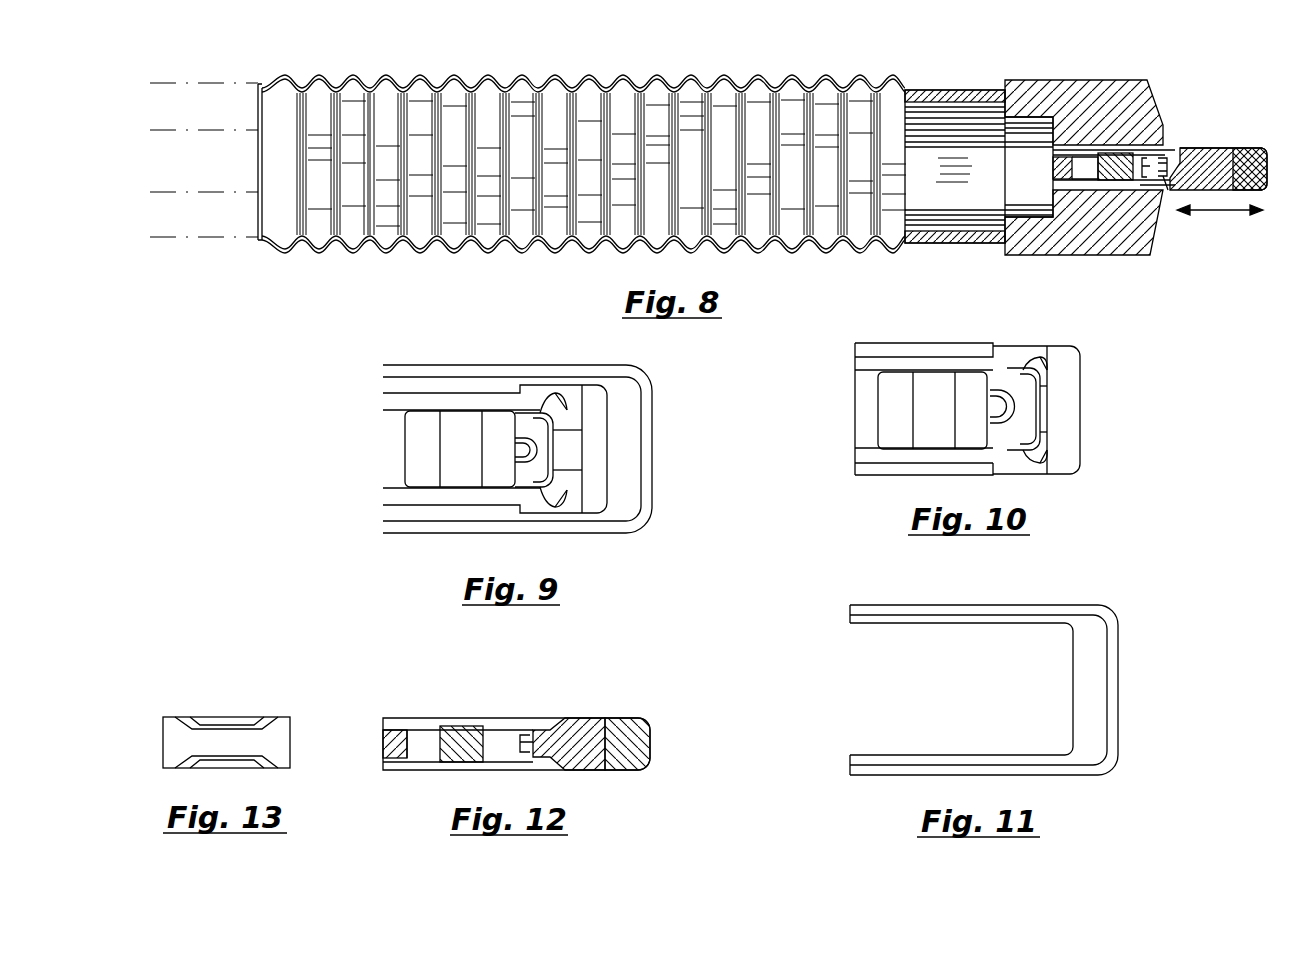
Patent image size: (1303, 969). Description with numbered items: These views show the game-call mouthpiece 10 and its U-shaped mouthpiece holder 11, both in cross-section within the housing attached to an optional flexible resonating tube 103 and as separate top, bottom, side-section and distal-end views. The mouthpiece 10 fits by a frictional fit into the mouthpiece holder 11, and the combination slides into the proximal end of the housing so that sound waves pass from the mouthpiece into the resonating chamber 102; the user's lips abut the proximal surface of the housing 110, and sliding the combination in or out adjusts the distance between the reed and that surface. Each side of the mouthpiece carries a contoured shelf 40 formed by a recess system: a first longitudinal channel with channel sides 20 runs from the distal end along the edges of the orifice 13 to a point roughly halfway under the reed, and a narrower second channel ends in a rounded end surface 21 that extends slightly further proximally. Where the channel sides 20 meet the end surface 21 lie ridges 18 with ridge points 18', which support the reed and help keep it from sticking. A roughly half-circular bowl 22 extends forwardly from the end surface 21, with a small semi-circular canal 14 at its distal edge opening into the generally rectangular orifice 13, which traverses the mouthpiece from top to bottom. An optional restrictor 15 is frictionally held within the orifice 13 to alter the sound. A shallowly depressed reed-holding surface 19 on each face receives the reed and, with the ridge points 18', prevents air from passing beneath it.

In FIG. 8, the mouthpiece 10 is at (1216, 146).
In FIG. 9, the mouthpiece 10 is at (628, 380).
In FIG. 10, the mouthpiece 10 is at (1100, 382).
In FIG. 12, the mouthpiece 10 is at (588, 708).
In FIG. 13, the mouthpiece 10 is at (268, 707).
In FIG. 8, the mouthpiece holder 11 is at (1268, 208).
In FIG. 9, the mouthpiece holder 11 is at (668, 382).
In FIG. 11, the mouthpiece holder 11 is at (1137, 630).
In FIG. 12, the mouthpiece holder 11 is at (670, 745).
In FIG. 8, the orifice 13 is at (1082, 178).
In FIG. 9, the orifice 13 is at (490, 460).
In FIG. 10, the orifice 13 is at (960, 416).
In FIG. 12, the orifice 13 is at (420, 748).
In FIG. 8, the canal 14 is at (1146, 185).
In FIG. 9, the canal 14 is at (524, 472).
In FIG. 10, the canal 14 is at (994, 395).
In FIG. 12, the canal 14 is at (523, 742).
In FIG. 8, the restrictor 15 is at (1114, 166).
In FIG. 9, the restrictor 15 is at (458, 437).
In FIG. 10, the restrictor 15 is at (928, 393).
In FIG. 12, the restrictor 15 is at (462, 745).
In FIG. 9, the ridges 18 is at (532, 412).
In FIG. 10, the ridges 18 is at (1053, 436).
In FIG. 9, the ridge points 18' is at (576, 449).
In FIG. 10, the ridge points 18' is at (1077, 404).
In FIG. 9, the reed-holding surface 19 is at (577, 480).
In FIG. 10, the reed-holding surface 19 is at (1052, 372).
In FIG. 8, the channel sides 20 is at (1084, 158).
In FIG. 9, the channel sides 20 is at (450, 405).
In FIG. 10, the channel sides 20 is at (903, 365).
In FIG. 9, the rounded end surface 21 is at (563, 427).
In FIG. 10, the rounded end surface 21 is at (1035, 420).
In FIG. 9, the bowl 22 is at (540, 450).
In FIG. 10, the bowl 22 is at (1015, 425).
In FIG. 8, the shelf 40 is at (1164, 172).
In FIG. 9, the shelf 40 is at (575, 448).
In FIG. 10, the shelf 40 is at (1040, 408).
In FIG. 8, the resonating chamber 102 is at (932, 124).
In FIG. 8, the flexible resonating tube 103 is at (492, 72).
In FIG. 8, the proximal surface of the housing 110 is at (1160, 192).